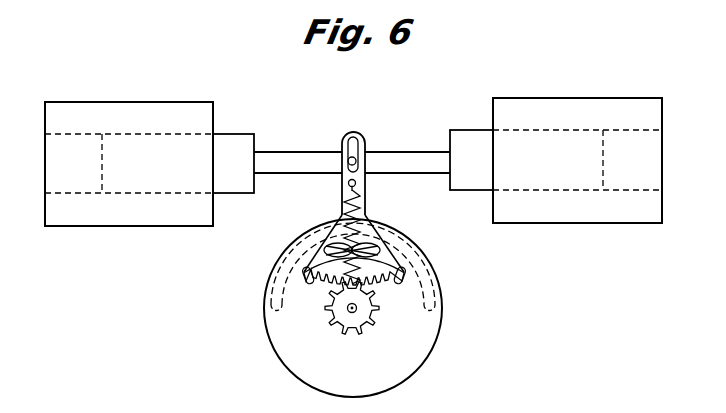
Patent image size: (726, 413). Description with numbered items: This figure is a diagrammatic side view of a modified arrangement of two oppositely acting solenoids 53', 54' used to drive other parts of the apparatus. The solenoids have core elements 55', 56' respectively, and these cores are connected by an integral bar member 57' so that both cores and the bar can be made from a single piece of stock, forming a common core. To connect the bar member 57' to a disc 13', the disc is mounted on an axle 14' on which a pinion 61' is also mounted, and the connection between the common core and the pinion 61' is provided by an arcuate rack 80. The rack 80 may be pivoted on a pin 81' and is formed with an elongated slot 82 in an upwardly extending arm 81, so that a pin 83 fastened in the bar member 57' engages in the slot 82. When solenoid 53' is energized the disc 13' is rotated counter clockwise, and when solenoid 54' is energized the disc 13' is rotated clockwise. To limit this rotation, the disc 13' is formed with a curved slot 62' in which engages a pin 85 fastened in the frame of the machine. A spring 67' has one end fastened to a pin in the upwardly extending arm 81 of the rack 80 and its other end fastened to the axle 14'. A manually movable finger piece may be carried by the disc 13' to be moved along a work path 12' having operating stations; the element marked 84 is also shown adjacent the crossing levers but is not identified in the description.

The solenoid 54' is at (129, 146).
The core element 56' is at (240, 144).
The bar member 57' is at (352, 146).
The core element 55' is at (475, 129).
The solenoid 53' is at (577, 145).
The spring 67' is at (356, 202).
The elongated slot 82 is at (355, 137).
The pin 83 is at (357, 157).
The upwardly extending arm 81 is at (324, 184).
The pin 81' is at (326, 237).
The disc 13' is at (374, 308).
The work path 12' is at (378, 266).
The arcuate rack 80 is at (385, 257).
The curved slot 62' is at (346, 302).
The pawl 84 is at (330, 245).
The pin 85 is at (352, 257).
The pinion 61' is at (368, 314).
The axle 14' is at (344, 339).